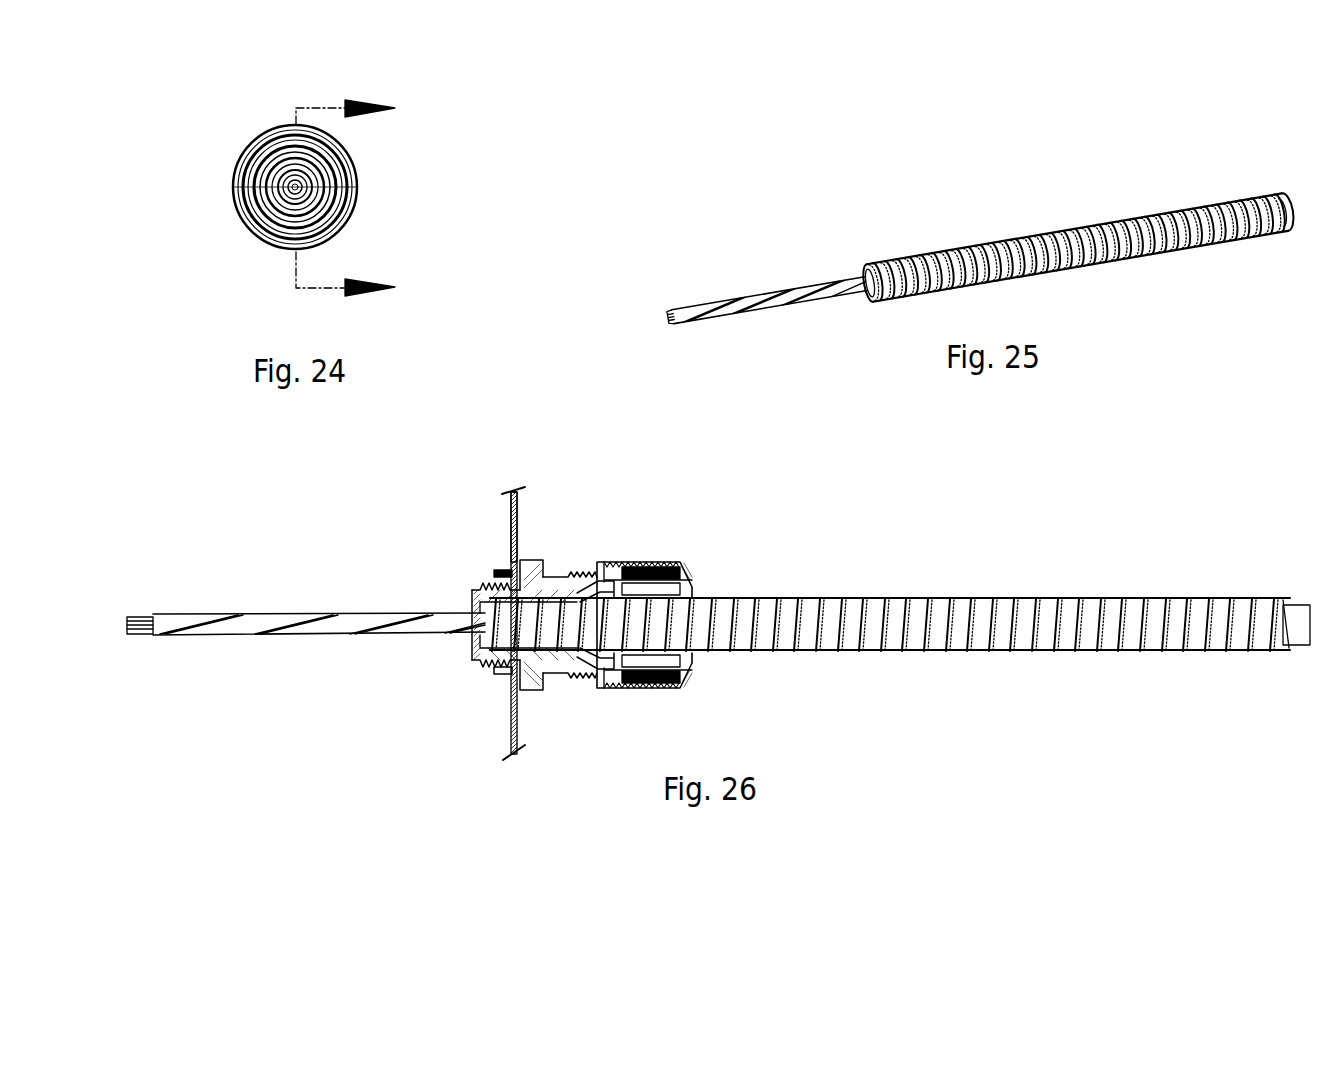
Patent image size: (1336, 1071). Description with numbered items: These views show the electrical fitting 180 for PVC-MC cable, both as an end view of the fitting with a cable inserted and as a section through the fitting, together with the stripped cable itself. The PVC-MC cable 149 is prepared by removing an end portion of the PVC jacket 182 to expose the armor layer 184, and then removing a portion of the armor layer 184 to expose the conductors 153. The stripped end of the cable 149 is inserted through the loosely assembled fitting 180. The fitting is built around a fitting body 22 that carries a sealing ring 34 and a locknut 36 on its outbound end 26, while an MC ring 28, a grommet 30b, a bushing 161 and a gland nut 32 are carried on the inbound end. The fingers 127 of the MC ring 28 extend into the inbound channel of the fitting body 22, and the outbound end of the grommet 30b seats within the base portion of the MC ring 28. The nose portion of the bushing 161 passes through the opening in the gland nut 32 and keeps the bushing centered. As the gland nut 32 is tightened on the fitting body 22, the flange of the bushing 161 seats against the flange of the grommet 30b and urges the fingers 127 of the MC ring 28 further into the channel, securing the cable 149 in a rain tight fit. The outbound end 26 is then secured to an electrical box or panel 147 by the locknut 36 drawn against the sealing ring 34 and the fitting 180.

In FIG. 24, the fitting 180 is at (213, 142).
In FIG. 26, the fitting 180 is at (450, 511).
In FIG. 24, the outbound end 26 is at (345, 199).
In FIG. 26, the outbound end 26 is at (470, 598).
In FIG. 25, the PVC-MC cable 149 is at (835, 198).
In FIG. 26, the PVC-MC cable 149 is at (1010, 598).
In FIG. 25, the PVC jacket 182 is at (1065, 228).
In FIG. 25, the armor layer 184 is at (895, 263).
In FIG. 25, the conductors 153 is at (783, 312).
In FIG. 26, the conductors 153 is at (327, 636).
In FIG. 26, the electrical box or panel 147 is at (517, 512).
In FIG. 26, the fitting body 22 is at (553, 580).
In FIG. 26, the gland nut 32 is at (640, 560).
In FIG. 26, the bushing 161 is at (693, 596).
In FIG. 26, the locknut 36 is at (503, 676).
In FIG. 26, the sealing ring 34 is at (510, 703).
In FIG. 26, the fingers 127 is at (587, 667).
In FIG. 26, the MC ring 28 is at (643, 685).
In FIG. 26, the grommet 30b is at (680, 663).